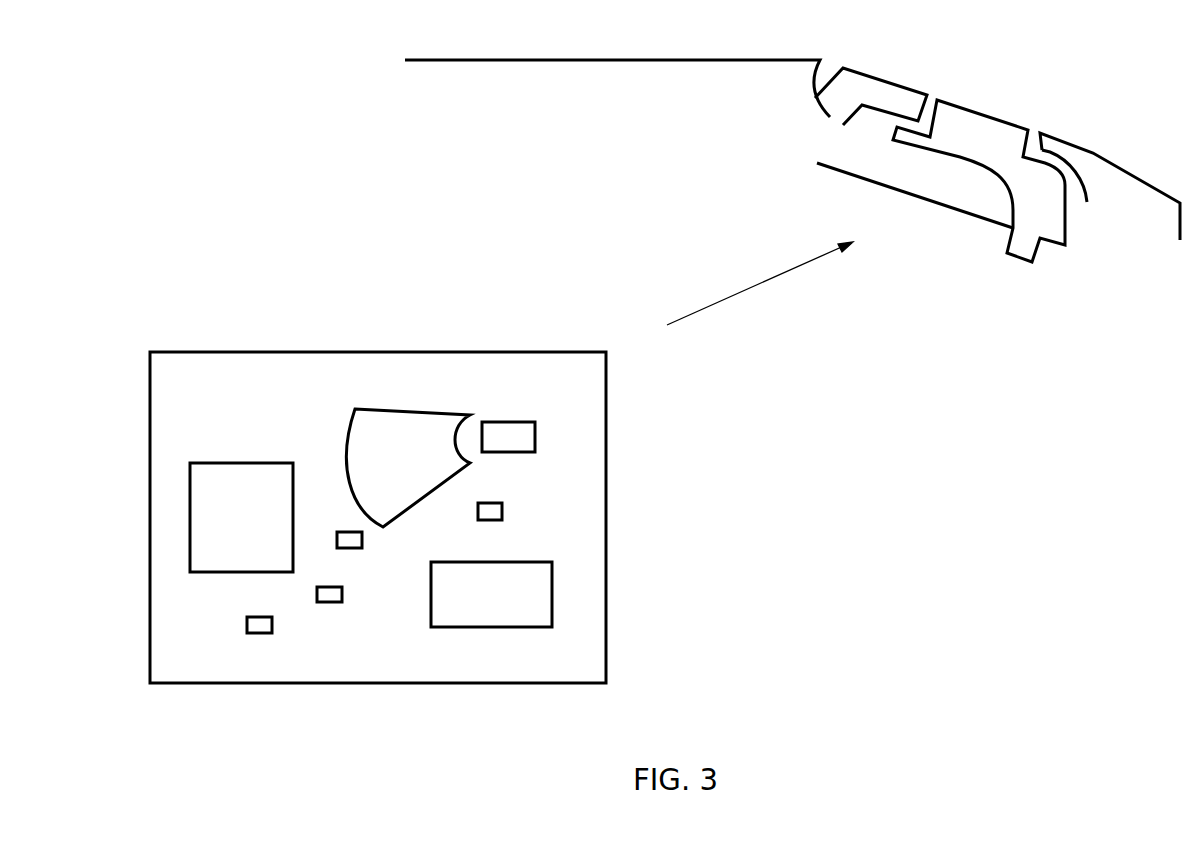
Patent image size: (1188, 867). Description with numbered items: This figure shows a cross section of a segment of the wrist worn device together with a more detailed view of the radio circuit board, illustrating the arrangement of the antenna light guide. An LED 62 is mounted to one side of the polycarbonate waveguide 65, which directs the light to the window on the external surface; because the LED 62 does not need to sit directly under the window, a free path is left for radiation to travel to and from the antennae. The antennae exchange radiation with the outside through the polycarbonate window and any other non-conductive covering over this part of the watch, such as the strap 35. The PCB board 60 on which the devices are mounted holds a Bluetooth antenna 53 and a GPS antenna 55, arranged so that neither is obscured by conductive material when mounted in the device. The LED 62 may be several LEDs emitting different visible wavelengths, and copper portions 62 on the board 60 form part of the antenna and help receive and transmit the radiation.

The strap 35 is at (1125, 192).
The Bluetooth antenna 53 is at (241, 517).
The GPS antenna 55 is at (491, 594).
The PCB board 60 is at (903, 193).
The LED 62 is at (535, 440).
The polycarbonate waveguide 65 is at (998, 130).